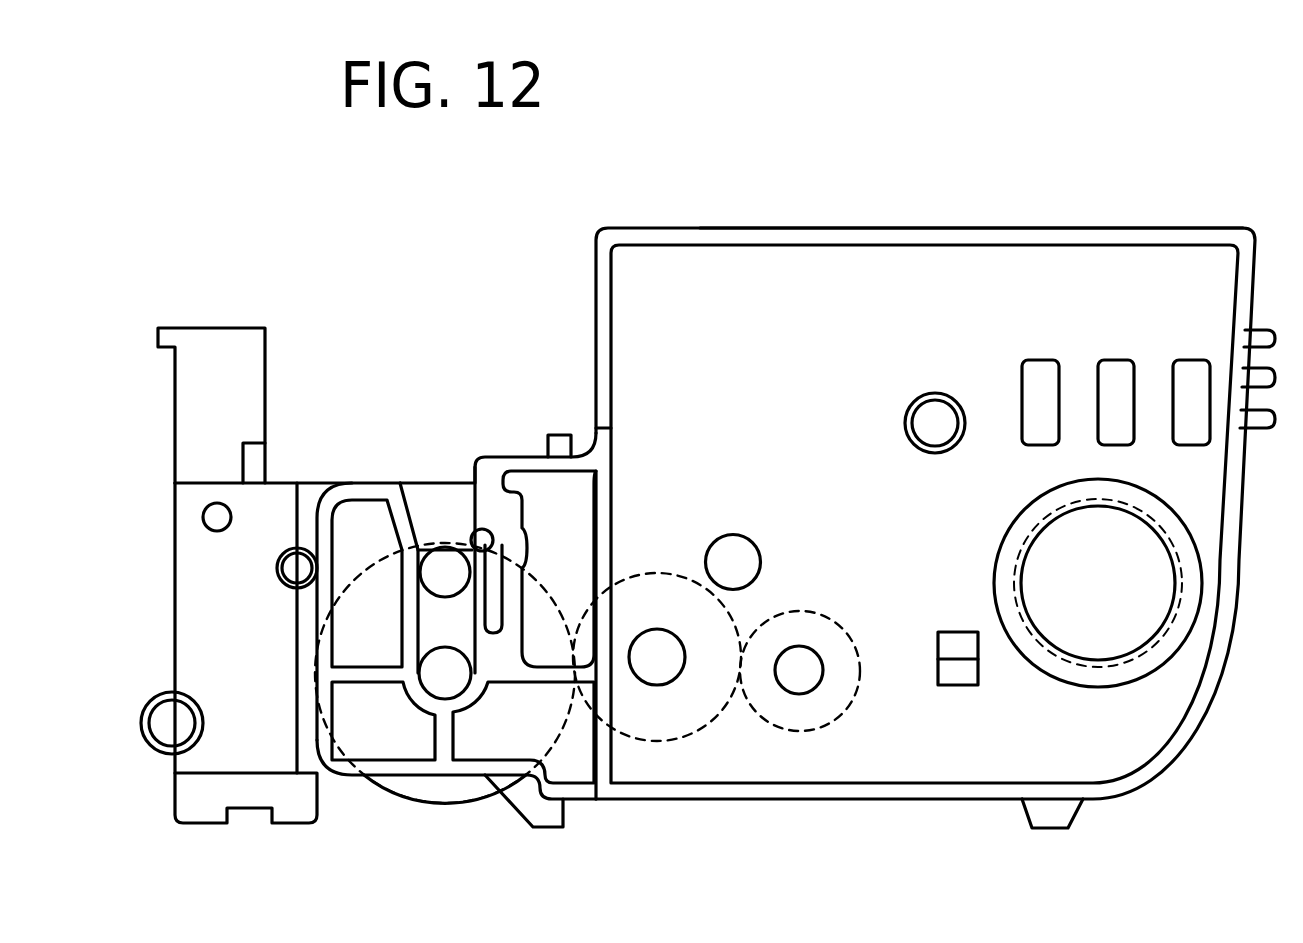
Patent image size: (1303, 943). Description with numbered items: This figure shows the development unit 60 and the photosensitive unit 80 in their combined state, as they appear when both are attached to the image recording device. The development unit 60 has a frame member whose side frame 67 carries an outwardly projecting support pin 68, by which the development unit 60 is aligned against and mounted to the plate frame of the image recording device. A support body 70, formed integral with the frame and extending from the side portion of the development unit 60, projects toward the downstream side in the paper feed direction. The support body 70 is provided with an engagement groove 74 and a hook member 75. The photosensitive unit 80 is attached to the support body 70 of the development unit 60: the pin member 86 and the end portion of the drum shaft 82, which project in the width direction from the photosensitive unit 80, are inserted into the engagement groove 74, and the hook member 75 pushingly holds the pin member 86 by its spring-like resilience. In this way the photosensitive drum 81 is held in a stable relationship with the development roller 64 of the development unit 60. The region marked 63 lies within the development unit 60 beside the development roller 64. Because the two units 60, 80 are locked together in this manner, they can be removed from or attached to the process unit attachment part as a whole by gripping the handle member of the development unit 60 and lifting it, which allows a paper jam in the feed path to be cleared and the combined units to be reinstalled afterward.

The development unit 60 is at (877, 151).
The developing roller position 63 is at (826, 617).
The development roller 64 is at (650, 573).
The side frame 67 is at (1028, 238).
The support pin 68 is at (733, 548).
The support body 70 is at (403, 777).
The engagement groove 74 is at (447, 632).
The hook member 75 is at (478, 536).
The photosensitive unit 80 is at (402, 360).
The photosensitive drum 81 is at (453, 807).
The drum shaft 82 is at (438, 672).
The pin member 86 is at (443, 548).